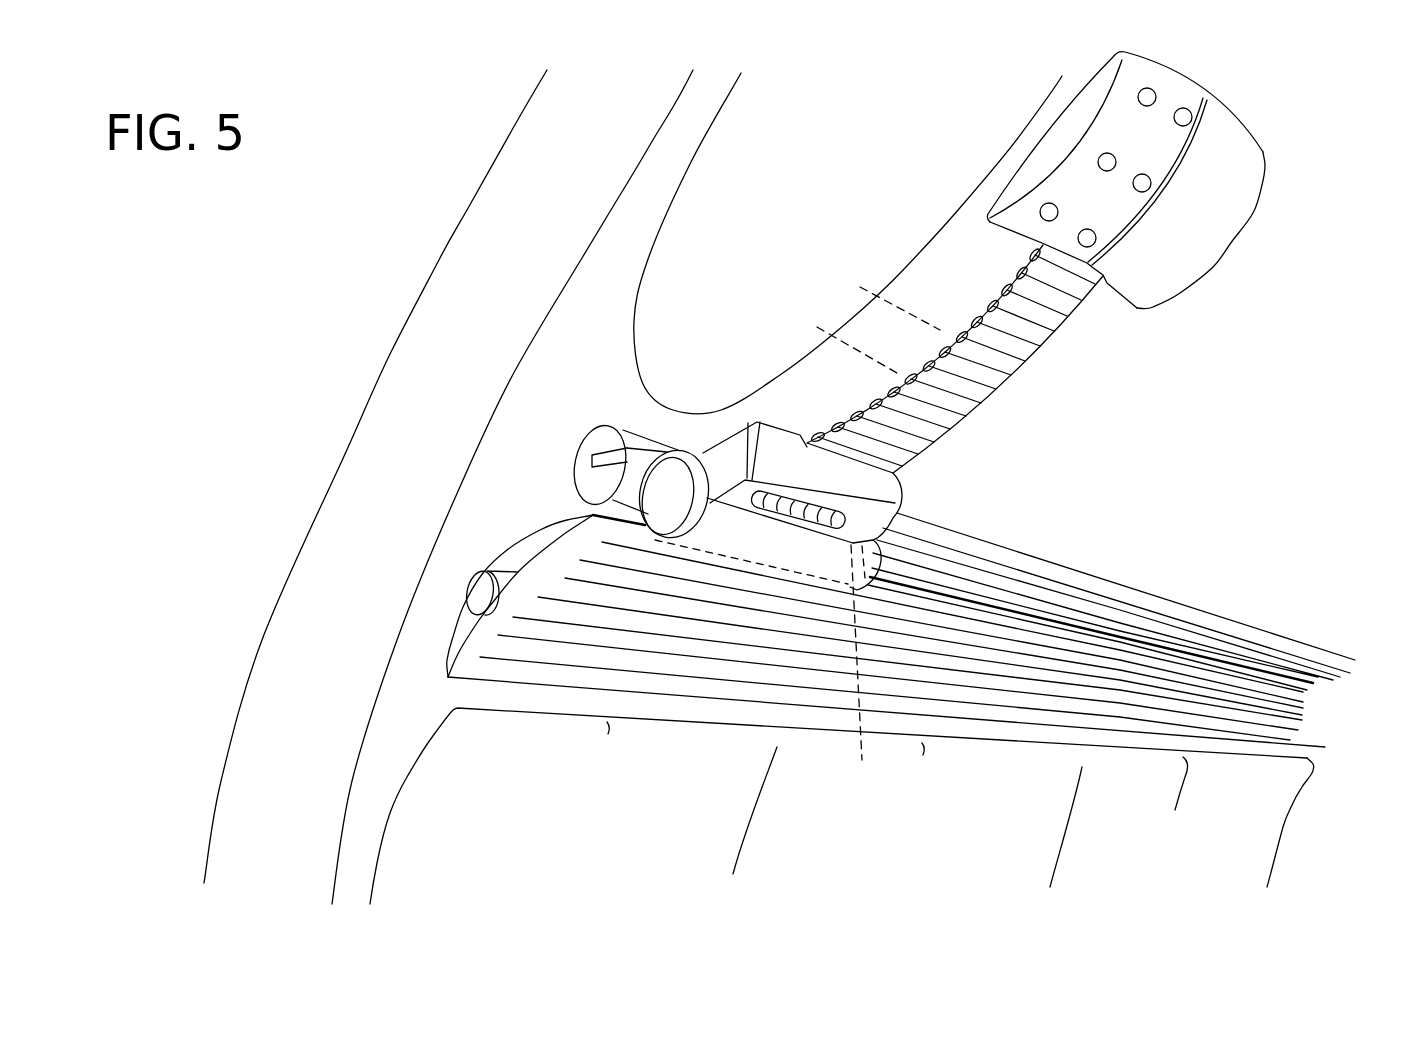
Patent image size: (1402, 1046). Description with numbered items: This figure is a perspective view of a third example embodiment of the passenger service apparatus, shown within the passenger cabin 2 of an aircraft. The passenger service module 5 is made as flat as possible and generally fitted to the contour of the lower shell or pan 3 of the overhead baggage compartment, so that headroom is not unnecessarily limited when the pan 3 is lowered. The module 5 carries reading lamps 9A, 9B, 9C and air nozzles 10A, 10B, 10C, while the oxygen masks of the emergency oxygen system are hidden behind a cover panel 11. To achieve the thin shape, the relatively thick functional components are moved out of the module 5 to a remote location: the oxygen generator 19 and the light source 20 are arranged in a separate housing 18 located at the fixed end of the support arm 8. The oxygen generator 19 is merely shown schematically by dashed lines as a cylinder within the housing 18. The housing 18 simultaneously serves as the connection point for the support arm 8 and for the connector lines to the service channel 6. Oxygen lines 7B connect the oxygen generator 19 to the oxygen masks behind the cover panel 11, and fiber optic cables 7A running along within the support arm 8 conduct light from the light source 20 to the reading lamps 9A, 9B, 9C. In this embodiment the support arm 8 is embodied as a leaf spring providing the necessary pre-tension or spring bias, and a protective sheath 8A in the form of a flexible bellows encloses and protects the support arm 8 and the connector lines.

The passenger cabin 2 is at (315, 423).
The lower shell or pan 3 is at (819, 189).
The passenger service module 5 is at (1230, 130).
The service channel 6 is at (588, 482).
The fiber optic cables 7A is at (837, 340).
The oxygen lines 7B is at (880, 297).
The support arm 8 is at (1077, 250).
The protective sheath 8A is at (993, 387).
The reading lamp 9A is at (1151, 89).
The reading lamp 9B is at (1100, 155).
The reading lamp 9C is at (1043, 206).
The air nozzle 10A is at (1189, 123).
The air nozzle 10B is at (1149, 189).
The air nozzle 10C is at (1094, 244).
The cover panel 11 is at (1130, 293).
The housing 18 is at (872, 560).
The oxygen generator 19 is at (865, 671).
The light source 20 is at (897, 507).